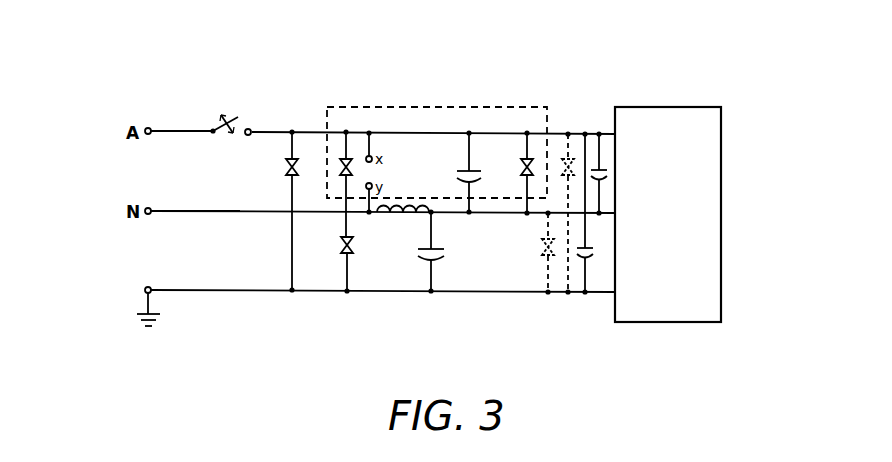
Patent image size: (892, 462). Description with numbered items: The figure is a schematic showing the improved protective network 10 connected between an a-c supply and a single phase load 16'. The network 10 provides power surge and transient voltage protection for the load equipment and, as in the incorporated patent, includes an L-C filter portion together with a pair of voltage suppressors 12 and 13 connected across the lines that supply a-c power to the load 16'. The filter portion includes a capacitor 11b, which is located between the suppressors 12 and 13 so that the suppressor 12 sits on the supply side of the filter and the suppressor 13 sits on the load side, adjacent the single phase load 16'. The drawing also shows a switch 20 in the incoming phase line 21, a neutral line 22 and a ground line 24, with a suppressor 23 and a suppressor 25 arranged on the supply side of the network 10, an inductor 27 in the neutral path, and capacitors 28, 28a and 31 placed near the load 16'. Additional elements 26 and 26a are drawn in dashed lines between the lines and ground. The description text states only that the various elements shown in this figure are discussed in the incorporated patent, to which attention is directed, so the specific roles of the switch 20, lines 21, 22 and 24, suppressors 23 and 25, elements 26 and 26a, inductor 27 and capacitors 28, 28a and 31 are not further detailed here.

The network 10 is at (380, 117).
The capacitor 11b is at (462, 170).
The voltage suppressor 12 is at (338, 162).
The voltage suppressor 13 is at (516, 158).
The single phase load 16' is at (706, 207).
The switch 20 is at (245, 117).
The phase A input line 21 is at (184, 128).
The neutral line 22 is at (227, 209).
The transient suppressor 23 is at (286, 168).
The ground line 24 is at (245, 290).
The transient suppressor 25 is at (341, 244).
The optional transient suppressor 26 is at (539, 250).
The optional transient suppressor 26a is at (559, 166).
The inductor 27 is at (413, 217).
The capacitor 28 is at (443, 248).
The capacitor 28a is at (588, 255).
The capacitor 31 is at (608, 170).